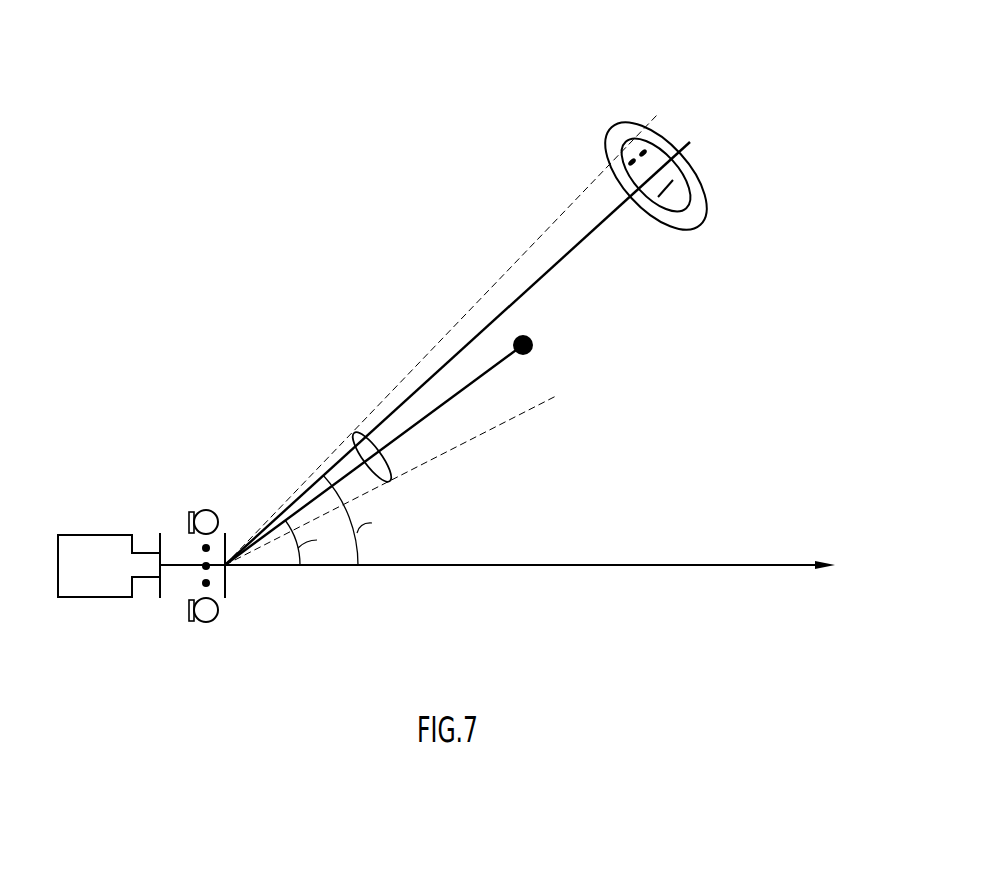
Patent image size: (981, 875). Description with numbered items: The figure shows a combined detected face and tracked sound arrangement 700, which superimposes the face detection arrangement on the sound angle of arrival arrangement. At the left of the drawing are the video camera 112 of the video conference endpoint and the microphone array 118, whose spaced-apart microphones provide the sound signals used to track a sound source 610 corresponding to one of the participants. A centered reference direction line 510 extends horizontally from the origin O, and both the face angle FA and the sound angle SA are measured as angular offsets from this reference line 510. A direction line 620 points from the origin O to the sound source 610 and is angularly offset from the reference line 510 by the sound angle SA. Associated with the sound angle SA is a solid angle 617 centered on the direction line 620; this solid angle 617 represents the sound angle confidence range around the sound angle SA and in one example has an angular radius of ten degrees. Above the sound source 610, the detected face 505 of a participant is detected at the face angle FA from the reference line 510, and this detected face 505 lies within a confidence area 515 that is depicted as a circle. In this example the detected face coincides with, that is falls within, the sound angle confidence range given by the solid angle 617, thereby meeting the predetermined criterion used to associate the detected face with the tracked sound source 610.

The combined detected face and tracked sound arrangement 700 is at (146, 190).
The reference direction line 510 is at (723, 566).
The video camera 112 is at (102, 598).
The microphone array 118 is at (205, 655).
The solid angle 617 is at (357, 457).
The direction line 620 is at (481, 376).
The sound source 610 is at (535, 347).
The confidence area 515 is at (608, 153).
The detected face 505 is at (687, 192).